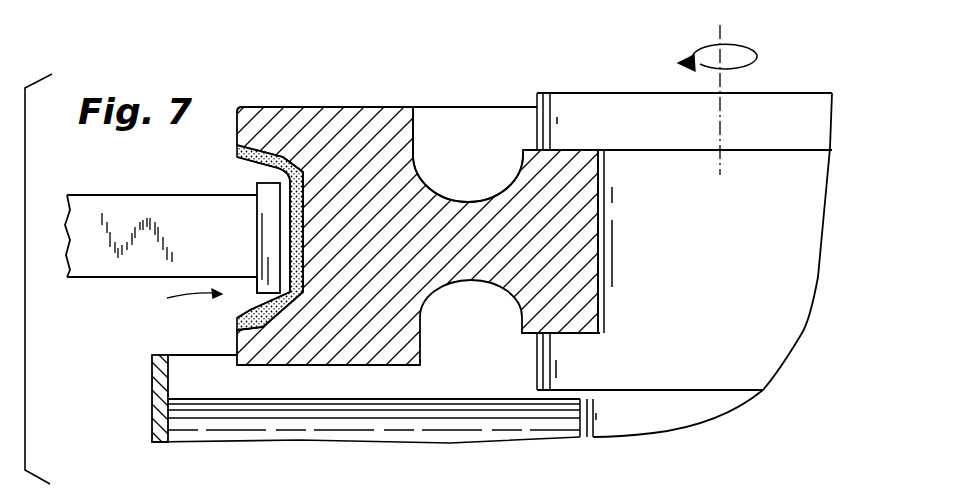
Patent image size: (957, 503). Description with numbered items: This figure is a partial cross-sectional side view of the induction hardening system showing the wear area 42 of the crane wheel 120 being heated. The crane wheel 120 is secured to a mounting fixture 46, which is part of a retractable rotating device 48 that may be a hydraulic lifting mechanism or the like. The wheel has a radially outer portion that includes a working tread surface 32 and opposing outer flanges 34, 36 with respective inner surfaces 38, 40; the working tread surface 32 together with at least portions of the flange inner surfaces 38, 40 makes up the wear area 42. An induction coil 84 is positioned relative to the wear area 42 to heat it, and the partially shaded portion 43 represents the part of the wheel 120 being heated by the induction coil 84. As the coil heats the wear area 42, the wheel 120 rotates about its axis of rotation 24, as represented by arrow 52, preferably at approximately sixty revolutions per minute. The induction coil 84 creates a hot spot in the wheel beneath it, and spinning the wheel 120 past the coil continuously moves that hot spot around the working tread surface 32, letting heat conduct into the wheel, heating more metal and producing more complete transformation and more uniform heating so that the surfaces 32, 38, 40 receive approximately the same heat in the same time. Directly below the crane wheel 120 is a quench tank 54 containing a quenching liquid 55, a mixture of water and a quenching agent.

The axis of rotation 24 is at (723, 10).
The arrow 52 is at (758, 60).
The retractable rotating device 48 is at (600, 88).
The mounting fixture 46 is at (690, 241).
The crane wheel 120 is at (399, 118).
The outer flange 34 is at (233, 118).
The flange inner surface 38 is at (237, 165).
The working tread surface 32 is at (290, 228).
The flange inner surface 40 is at (248, 305).
The induction coil 84 is at (102, 257).
The wear area 42 is at (176, 300).
The partially shaded portion 43 is at (240, 313).
The outer flange 36 is at (250, 350).
The quench tank 54 is at (152, 390).
The quenching liquid 55 is at (380, 428).